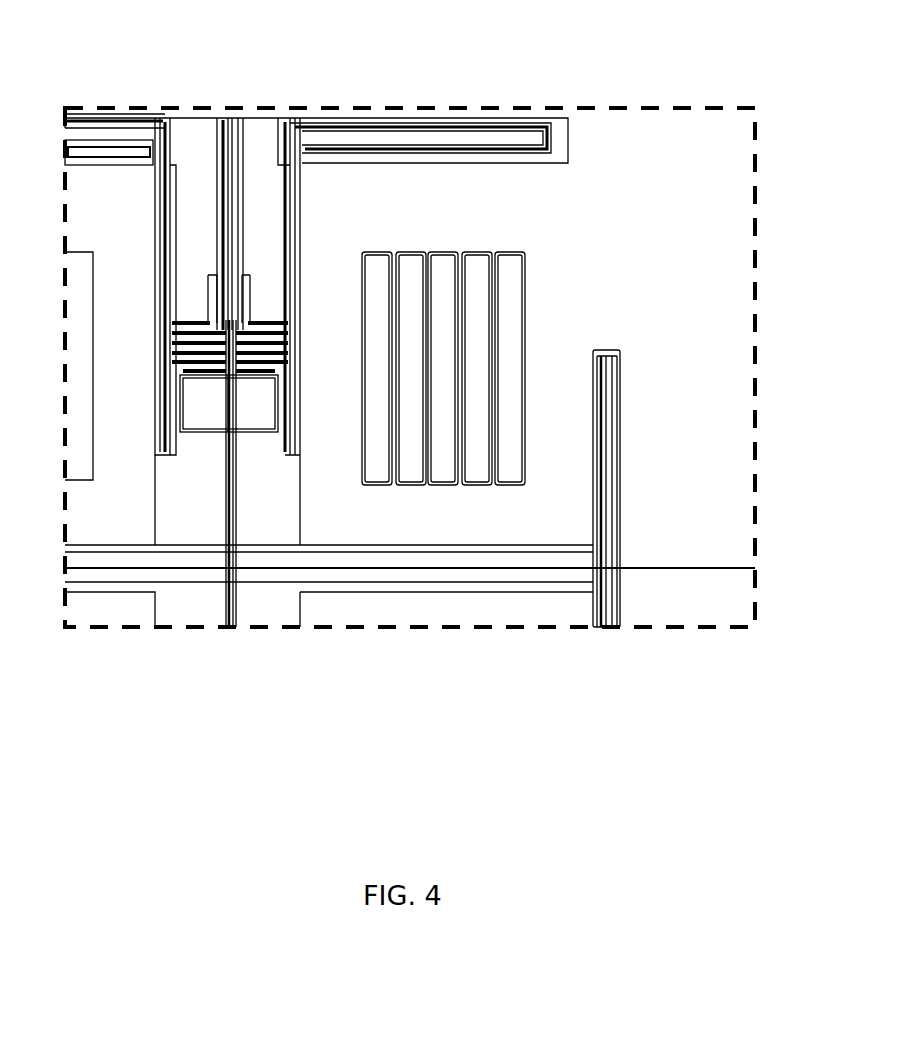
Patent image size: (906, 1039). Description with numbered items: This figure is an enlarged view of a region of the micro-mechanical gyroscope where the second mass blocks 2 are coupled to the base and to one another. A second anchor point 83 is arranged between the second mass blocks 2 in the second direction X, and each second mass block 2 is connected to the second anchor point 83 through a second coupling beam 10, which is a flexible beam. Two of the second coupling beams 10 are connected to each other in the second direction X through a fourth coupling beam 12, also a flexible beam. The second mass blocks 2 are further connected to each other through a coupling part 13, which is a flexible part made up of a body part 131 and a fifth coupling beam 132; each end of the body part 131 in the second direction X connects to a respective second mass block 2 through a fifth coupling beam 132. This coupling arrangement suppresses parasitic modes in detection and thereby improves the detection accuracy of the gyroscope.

The second mass block 2 is at (96, 208).
The second coupling beam 10 is at (298, 268).
The fourth coupling beam 12 is at (232, 325).
The coupling part 13 is at (410, 566).
The body part 131 is at (412, 572).
The fifth coupling beam 132 is at (608, 546).
The second anchor point 83 is at (208, 413).